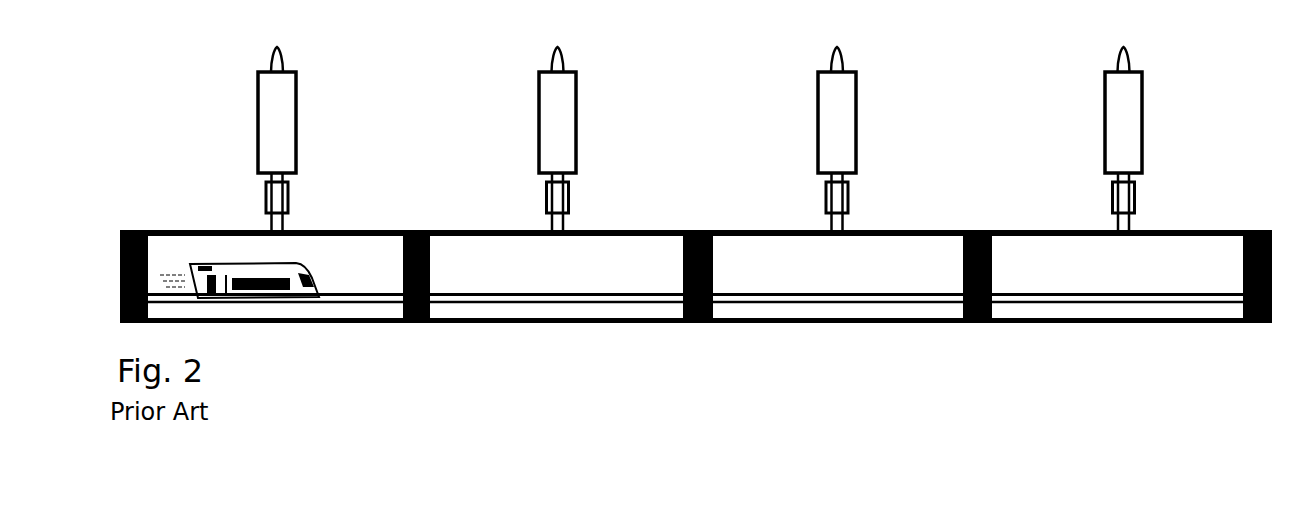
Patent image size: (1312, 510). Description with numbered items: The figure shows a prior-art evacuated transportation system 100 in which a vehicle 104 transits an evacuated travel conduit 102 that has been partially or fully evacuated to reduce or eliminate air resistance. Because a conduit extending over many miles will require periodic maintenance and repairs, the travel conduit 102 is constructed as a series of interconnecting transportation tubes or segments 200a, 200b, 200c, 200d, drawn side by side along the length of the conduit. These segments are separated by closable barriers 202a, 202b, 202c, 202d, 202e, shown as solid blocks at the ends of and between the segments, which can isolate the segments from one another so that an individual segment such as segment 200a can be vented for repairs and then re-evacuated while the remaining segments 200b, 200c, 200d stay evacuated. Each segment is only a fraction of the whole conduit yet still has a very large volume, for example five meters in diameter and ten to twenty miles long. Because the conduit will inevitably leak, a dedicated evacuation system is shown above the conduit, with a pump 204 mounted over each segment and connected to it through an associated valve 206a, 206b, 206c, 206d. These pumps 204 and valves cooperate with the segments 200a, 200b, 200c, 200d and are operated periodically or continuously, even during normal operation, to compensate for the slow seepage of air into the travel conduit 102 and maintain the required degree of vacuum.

The evacuated transportation system 100 is at (433, 86).
The travel conduit 102 is at (310, 230).
The vehicle 104 is at (228, 263).
The segment 200a is at (275, 249).
The segment 200b is at (556, 249).
The segment 200c is at (838, 249).
The segment 200d is at (1117, 249).
The closable barrier 202a is at (135, 230).
The closable barrier 202b is at (418, 230).
The closable barrier 202c is at (697, 230).
The closable barrier 202d is at (980, 230).
The closable barrier 202e is at (1258, 230).
The pump 204 is at (258, 110).
The valve 206a is at (288, 208).
The valve 206b is at (568, 200).
The valve 206c is at (848, 200).
The valve 206d is at (1134, 200).